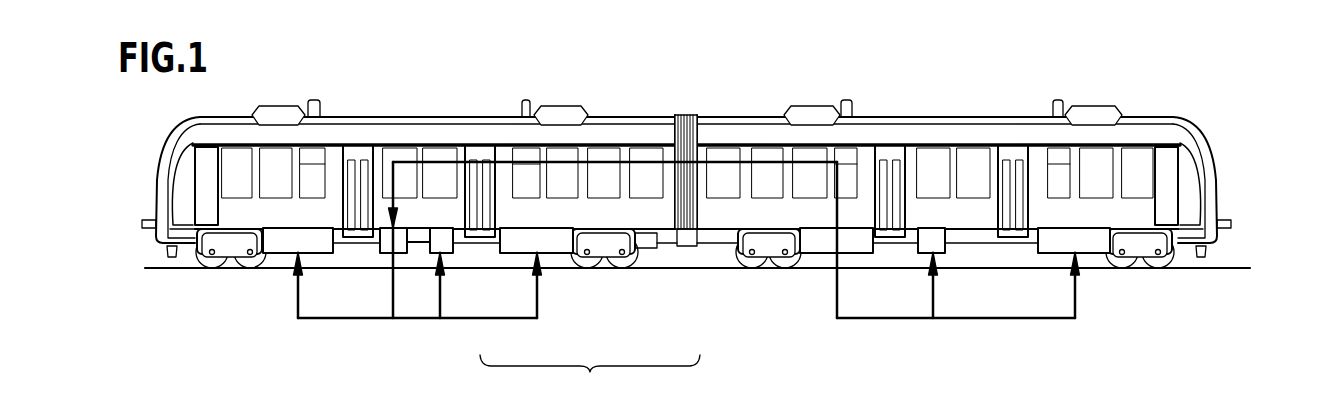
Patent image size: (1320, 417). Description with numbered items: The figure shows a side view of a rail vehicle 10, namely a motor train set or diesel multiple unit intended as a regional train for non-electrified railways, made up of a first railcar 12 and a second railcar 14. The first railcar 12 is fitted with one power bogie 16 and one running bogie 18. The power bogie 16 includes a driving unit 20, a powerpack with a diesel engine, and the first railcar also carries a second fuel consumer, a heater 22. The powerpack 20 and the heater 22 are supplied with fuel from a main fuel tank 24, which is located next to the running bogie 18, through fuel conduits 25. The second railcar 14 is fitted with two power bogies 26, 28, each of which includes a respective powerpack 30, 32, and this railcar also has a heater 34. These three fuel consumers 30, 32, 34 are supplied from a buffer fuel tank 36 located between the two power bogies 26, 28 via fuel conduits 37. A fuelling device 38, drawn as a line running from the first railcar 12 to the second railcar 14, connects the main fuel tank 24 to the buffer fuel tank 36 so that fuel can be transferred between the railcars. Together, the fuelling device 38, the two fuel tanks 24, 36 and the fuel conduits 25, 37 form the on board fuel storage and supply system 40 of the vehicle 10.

The rail vehicle 10 is at (696, 213).
The first railcar 12 is at (992, 133).
The second railcar 14 is at (440, 135).
The power bogie 16 is at (1143, 245).
The running bogie 18 is at (773, 243).
The driving unit 20 is at (1088, 240).
The heater 22 is at (925, 252).
The main fuel tank 24 is at (820, 243).
The fuel conduits 25 is at (850, 318).
The power bogie 26 is at (232, 250).
The power bogie 28 is at (615, 240).
The powerpack 30 is at (282, 243).
The powerpack 32 is at (553, 240).
The heater 34 is at (447, 247).
The buffer fuel tank 36 is at (397, 252).
The fuel conduits 37 is at (515, 319).
The fuelling device 38 is at (605, 163).
The on board fuel storage and supply system 40 is at (590, 376).